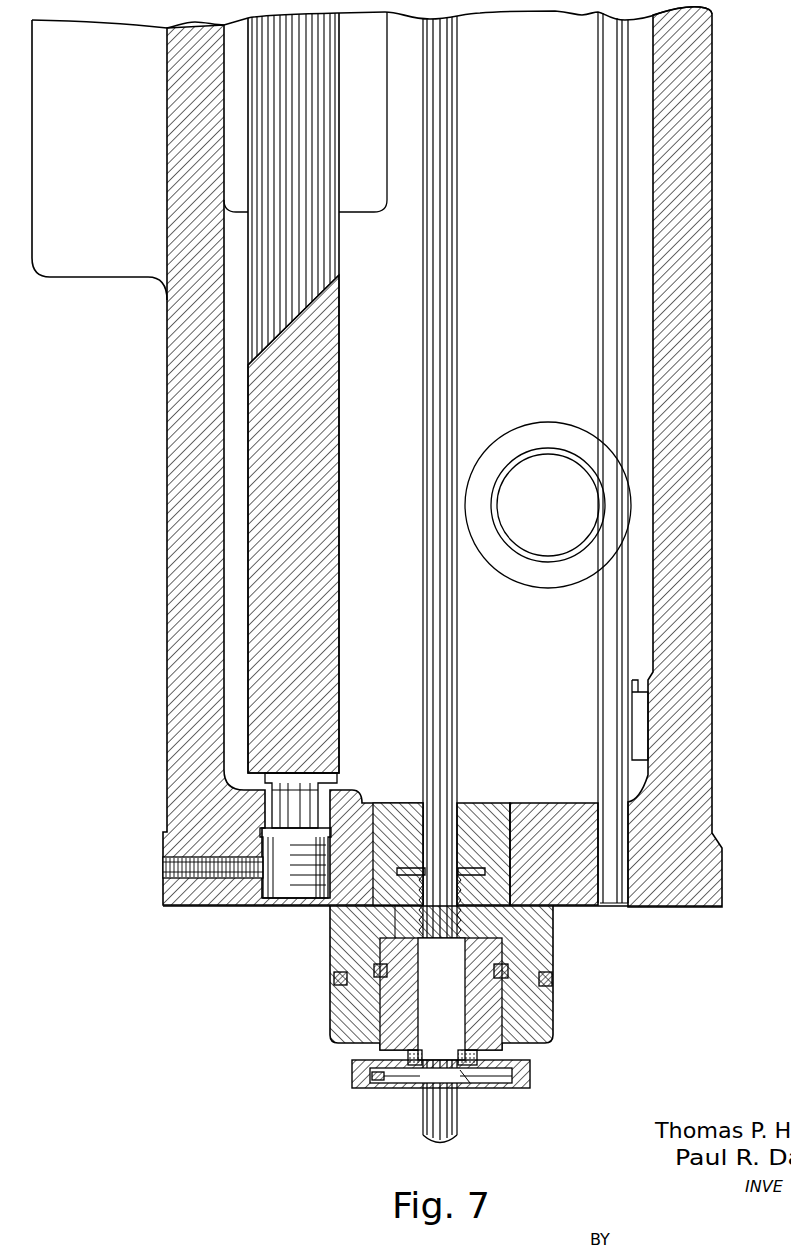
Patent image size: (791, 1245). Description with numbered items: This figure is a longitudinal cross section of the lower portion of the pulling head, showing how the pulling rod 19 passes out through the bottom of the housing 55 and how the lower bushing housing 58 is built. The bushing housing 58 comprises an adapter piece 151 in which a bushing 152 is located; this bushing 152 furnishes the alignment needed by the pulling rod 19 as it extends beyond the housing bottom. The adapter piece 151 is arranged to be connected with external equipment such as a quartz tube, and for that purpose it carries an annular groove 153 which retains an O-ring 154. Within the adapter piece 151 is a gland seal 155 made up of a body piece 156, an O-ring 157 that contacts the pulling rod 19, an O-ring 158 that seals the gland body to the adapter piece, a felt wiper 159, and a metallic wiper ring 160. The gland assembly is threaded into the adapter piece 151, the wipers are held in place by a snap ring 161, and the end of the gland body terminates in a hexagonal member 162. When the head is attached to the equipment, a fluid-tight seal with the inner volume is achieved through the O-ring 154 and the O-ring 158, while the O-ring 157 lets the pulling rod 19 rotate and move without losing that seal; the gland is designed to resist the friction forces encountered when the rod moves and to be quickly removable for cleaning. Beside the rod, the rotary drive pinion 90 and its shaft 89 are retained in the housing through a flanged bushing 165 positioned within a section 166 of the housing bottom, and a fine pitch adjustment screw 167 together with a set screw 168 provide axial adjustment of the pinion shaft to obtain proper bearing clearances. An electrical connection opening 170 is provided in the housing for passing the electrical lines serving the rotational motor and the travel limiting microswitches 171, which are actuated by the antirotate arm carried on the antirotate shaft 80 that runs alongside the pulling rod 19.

The pulling rod 19 is at (445, 228).
The housing 55 is at (700, 500).
The bushing housing 58 is at (573, 1010).
The antirotate shaft 80 is at (612, 343).
The shaft 89 is at (318, 757).
The rotary drive pinion 90 is at (320, 350).
The adapter piece 151 is at (487, 825).
The bushing 152 is at (420, 803).
The annular groove 153 is at (550, 976).
The O-ring 154 is at (338, 982).
The gland seal 155 is at (357, 939).
The body piece 156 is at (505, 1043).
The O-ring 157 is at (410, 912).
The O-ring 158 is at (502, 968).
The felt wiper 159 is at (385, 1052).
The metallic wiper ring 160 is at (488, 1076).
The snap ring 161 is at (380, 1080).
The hexagonal member 162 is at (355, 1078).
The flanged bushing 165 is at (290, 797).
The section of the housing bottom 166 is at (558, 815).
The fine pitch adjustment screw 167 is at (277, 890).
The set screw 168 is at (230, 878).
The electrical connection opening 170 is at (566, 503).
The travel limiting microswitches 171 is at (641, 725).